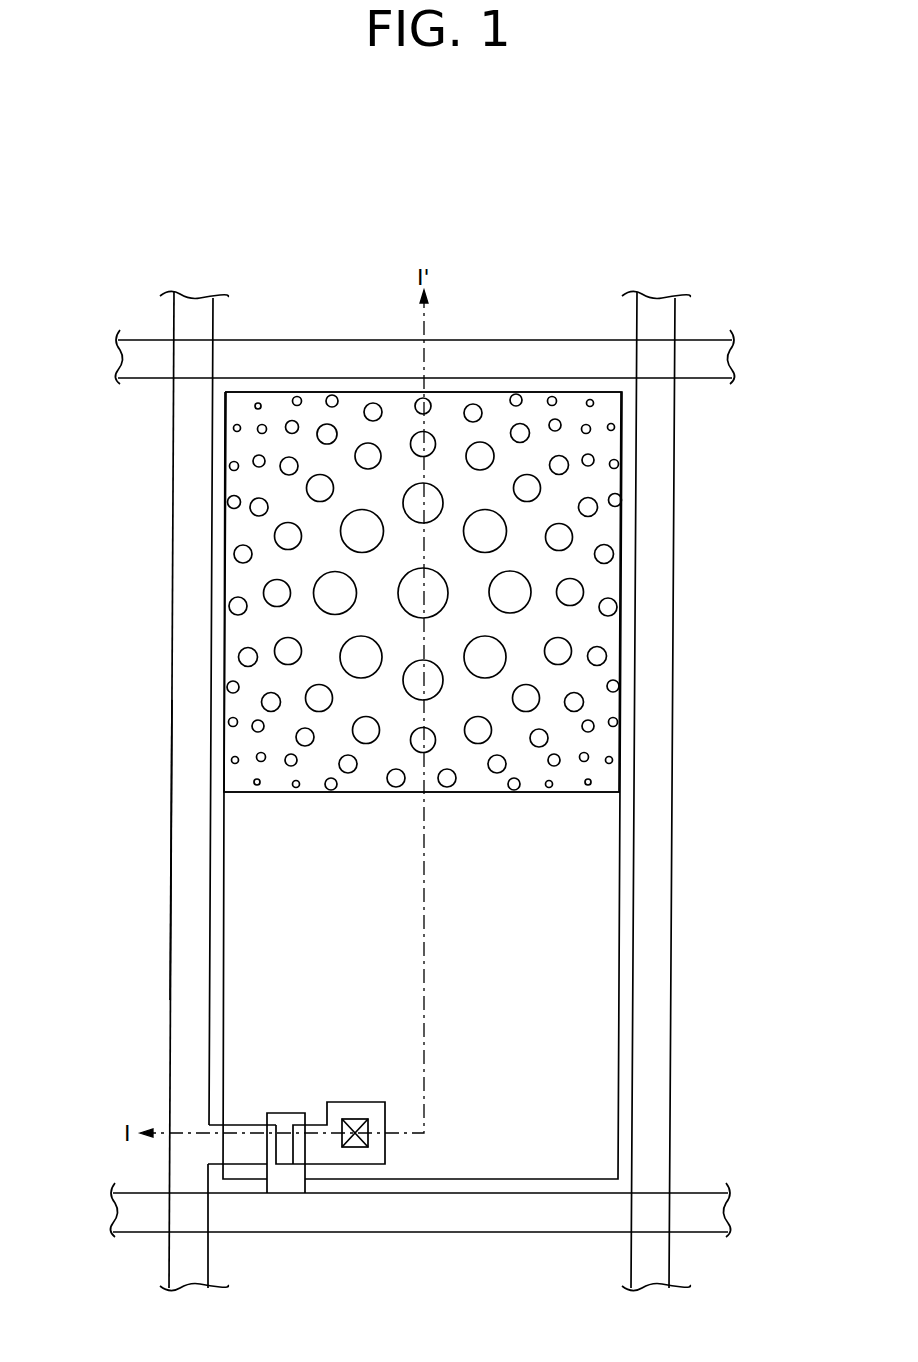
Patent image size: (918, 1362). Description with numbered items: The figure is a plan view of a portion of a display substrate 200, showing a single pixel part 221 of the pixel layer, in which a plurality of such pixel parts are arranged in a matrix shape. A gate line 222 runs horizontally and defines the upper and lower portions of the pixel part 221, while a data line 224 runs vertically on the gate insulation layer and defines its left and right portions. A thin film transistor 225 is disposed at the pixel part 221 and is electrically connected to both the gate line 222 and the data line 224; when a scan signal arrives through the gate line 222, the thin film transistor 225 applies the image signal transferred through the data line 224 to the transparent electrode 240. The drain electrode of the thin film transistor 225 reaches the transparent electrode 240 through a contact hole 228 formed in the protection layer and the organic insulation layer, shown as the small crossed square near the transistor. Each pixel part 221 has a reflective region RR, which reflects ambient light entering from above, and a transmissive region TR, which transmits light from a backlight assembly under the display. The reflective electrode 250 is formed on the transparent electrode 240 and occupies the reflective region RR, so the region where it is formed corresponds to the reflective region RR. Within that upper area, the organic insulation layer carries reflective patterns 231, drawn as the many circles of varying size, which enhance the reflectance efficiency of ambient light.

The display substrate 200 is at (531, 281).
The pixel part 221 is at (212, 546).
The gate line 222 is at (468, 1215).
The data line 224 is at (188, 984).
The thin film transistor 225 is at (288, 1196).
The contact hole 228 is at (364, 1155).
The reflective pattern 231 is at (512, 578).
The transparent electrode 240 is at (620, 967).
The reflective electrode 250 is at (623, 643).
The reflective region RR is at (600, 483).
The transmissive region TR is at (598, 875).